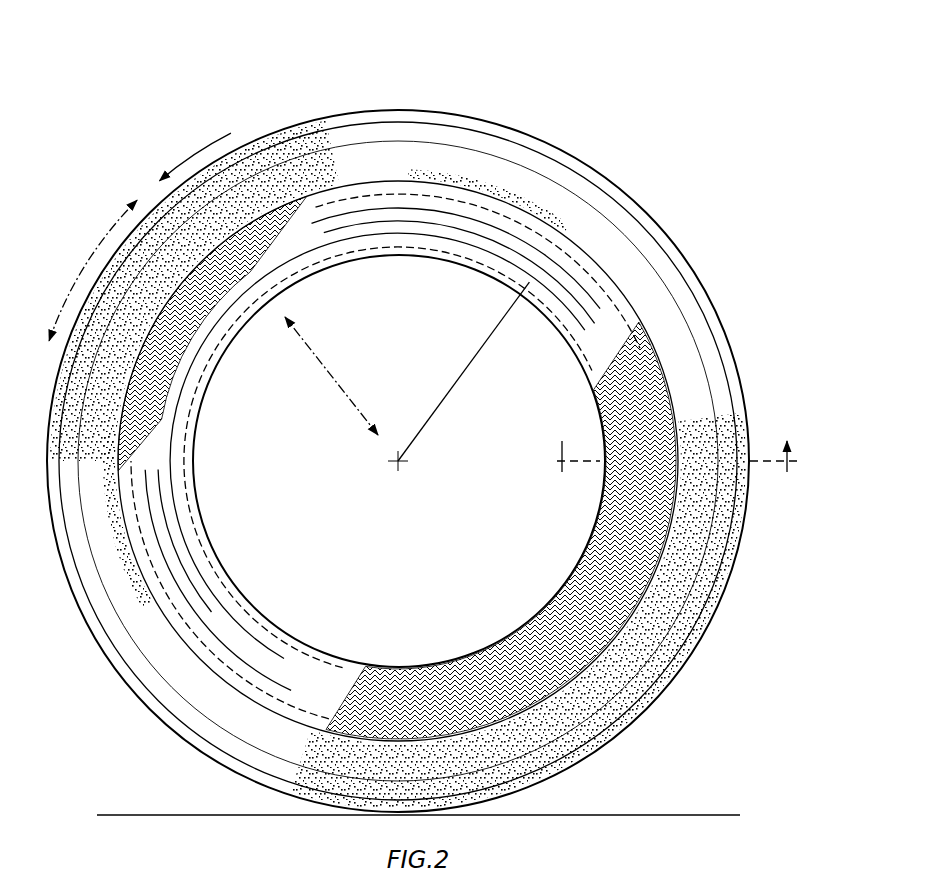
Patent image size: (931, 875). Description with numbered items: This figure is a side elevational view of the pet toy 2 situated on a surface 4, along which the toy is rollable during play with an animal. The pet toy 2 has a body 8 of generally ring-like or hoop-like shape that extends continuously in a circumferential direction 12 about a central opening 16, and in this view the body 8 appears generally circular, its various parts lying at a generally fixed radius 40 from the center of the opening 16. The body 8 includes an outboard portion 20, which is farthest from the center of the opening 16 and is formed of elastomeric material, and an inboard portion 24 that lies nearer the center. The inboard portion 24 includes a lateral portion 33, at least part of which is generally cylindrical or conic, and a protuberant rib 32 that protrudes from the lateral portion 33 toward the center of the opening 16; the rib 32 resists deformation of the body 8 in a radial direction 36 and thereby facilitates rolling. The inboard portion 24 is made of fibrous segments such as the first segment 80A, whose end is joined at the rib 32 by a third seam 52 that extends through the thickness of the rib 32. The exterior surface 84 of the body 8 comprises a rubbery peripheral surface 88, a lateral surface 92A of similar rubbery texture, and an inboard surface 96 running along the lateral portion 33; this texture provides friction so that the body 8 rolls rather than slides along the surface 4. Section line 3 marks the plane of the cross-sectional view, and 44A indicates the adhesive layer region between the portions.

The pet toy 2 is at (478, 67).
The surface 4 is at (198, 815).
The body 8 is at (540, 136).
The circumferential direction 12 is at (92, 254).
The central opening 16 is at (522, 340).
The outboard portion 20 is at (346, 107).
The inboard portion 24 is at (218, 362).
The protuberant rib 32 is at (190, 452).
The lateral portion 33 is at (388, 680).
The radial direction 36 is at (328, 367).
The radius 40 is at (460, 376).
The first layer 44A is at (210, 640).
The third seam 52 is at (225, 588).
The first segment 80A is at (283, 667).
The exterior surface 84 is at (386, 107).
The peripheral surface 88 is at (581, 162).
The lateral surface 92A is at (590, 215).
The inboard surface 96 is at (603, 308).
The section line 3- 3 is at (675, 472).